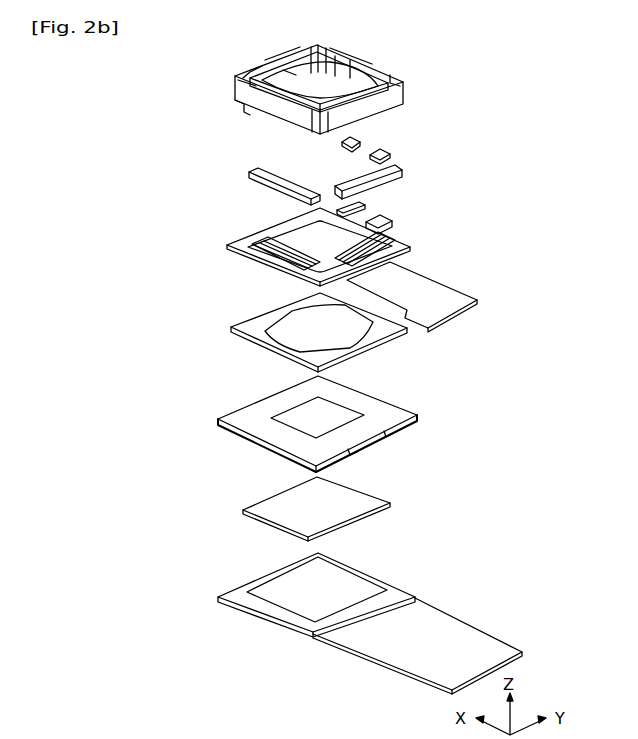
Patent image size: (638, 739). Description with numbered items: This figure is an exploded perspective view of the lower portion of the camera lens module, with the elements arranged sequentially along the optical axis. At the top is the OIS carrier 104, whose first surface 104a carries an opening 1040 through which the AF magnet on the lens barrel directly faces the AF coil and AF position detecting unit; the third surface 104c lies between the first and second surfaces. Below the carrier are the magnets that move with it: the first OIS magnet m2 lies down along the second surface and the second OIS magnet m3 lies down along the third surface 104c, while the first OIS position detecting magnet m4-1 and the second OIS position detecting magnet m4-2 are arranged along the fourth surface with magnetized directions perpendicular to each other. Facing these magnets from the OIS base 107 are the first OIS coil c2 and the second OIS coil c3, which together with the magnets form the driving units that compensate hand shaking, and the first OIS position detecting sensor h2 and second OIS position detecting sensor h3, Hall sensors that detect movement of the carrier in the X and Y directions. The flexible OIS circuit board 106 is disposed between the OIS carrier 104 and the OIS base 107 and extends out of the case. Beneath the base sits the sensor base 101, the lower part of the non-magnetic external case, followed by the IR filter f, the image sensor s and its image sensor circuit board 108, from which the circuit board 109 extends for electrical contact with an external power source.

The OIS carrier 104 is at (380, 52).
The first surface of the OIS carrier 104a is at (268, 64).
The opening 1040 is at (289, 70).
The third surface of the OIS carrier 104c is at (350, 55).
The second OIS position detecting magnet m4-2 is at (358, 138).
The first OIS position detecting magnet m4-1 is at (392, 154).
The first OIS magnet m2 is at (405, 172).
The second OIS magnet m3 is at (258, 173).
The second OIS position detecting sensor h3 is at (364, 209).
The first OIS position detecting sensor h2 is at (393, 223).
The first OIS coil c2 is at (396, 237).
The second OIS coil c3 is at (264, 270).
The OIS circuit board 106 is at (235, 230).
The OIS base 107 is at (396, 340).
The sensor base 101 is at (404, 430).
The IR filter f is at (376, 510).
The image sensor circuit board 108 is at (268, 614).
The image sensor s is at (272, 588).
The circuit board 109 is at (383, 640).